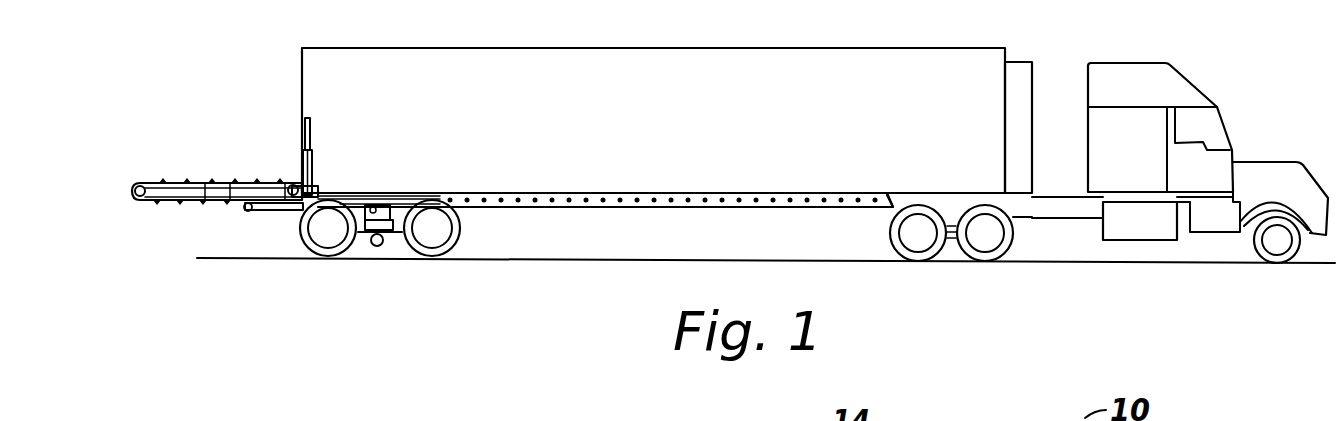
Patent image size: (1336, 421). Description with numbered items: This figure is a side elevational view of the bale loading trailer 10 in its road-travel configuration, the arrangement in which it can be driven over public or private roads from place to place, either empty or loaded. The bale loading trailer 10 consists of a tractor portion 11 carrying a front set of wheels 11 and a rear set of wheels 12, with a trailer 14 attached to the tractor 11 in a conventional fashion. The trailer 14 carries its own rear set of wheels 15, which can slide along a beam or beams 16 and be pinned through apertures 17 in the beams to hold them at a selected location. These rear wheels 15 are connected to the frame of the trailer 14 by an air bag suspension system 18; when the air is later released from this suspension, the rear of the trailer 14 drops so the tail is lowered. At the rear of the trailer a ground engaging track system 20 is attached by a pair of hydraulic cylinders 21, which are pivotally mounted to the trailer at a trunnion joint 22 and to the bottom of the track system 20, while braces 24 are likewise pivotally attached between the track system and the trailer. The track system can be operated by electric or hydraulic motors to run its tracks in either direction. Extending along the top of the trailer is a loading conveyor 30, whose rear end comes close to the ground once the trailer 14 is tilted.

The bale loading trailer 10 is at (1140, 47).
The tractor portion 11 is at (1273, 245).
The rear set of wheels 12 is at (953, 237).
The trailer 14 is at (853, 63).
The rear set of wheels 15 is at (443, 237).
The beam 16 is at (598, 195).
The apertures 17 is at (507, 195).
The air bag suspension system 18 is at (385, 227).
The ground engaging track system 20 is at (277, 213).
The hydraulic cylinders 21 is at (312, 168).
The trunnion joint 22 is at (337, 193).
The braces 24 is at (418, 194).
The loading conveyor 30 is at (203, 182).